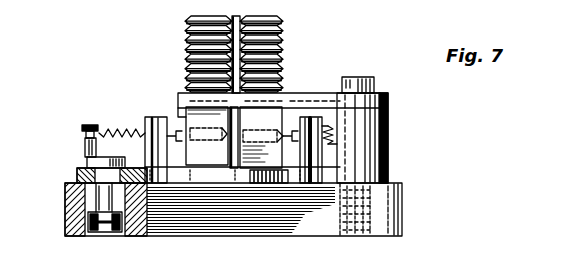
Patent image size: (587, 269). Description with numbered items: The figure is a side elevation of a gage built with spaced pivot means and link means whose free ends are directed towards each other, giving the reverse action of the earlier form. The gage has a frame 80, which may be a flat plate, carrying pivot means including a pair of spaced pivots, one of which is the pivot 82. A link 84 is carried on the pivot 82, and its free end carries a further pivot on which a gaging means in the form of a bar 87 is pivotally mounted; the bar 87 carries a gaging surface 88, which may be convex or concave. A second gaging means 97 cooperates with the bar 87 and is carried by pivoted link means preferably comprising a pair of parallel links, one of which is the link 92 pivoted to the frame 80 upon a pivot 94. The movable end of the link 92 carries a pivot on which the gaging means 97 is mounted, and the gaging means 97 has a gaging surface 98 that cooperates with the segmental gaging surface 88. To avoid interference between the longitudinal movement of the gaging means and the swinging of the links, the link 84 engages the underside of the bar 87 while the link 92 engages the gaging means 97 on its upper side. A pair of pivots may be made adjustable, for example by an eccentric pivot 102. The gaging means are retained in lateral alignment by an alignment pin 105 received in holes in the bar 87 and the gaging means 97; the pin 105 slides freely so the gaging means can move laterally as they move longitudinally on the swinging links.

The frame 80 is at (390, 205).
The pivot 82 is at (93, 162).
The link 84 is at (188, 186).
The bar 87 is at (261, 137).
The gaging surface 88 is at (278, 39).
The link 92 is at (307, 93).
The pivot 94 is at (378, 88).
The gaging means 97 is at (207, 136).
The gaging surface 98 is at (188, 46).
The eccentric pivot 102 is at (80, 176).
The alignment pin 105 is at (235, 142).